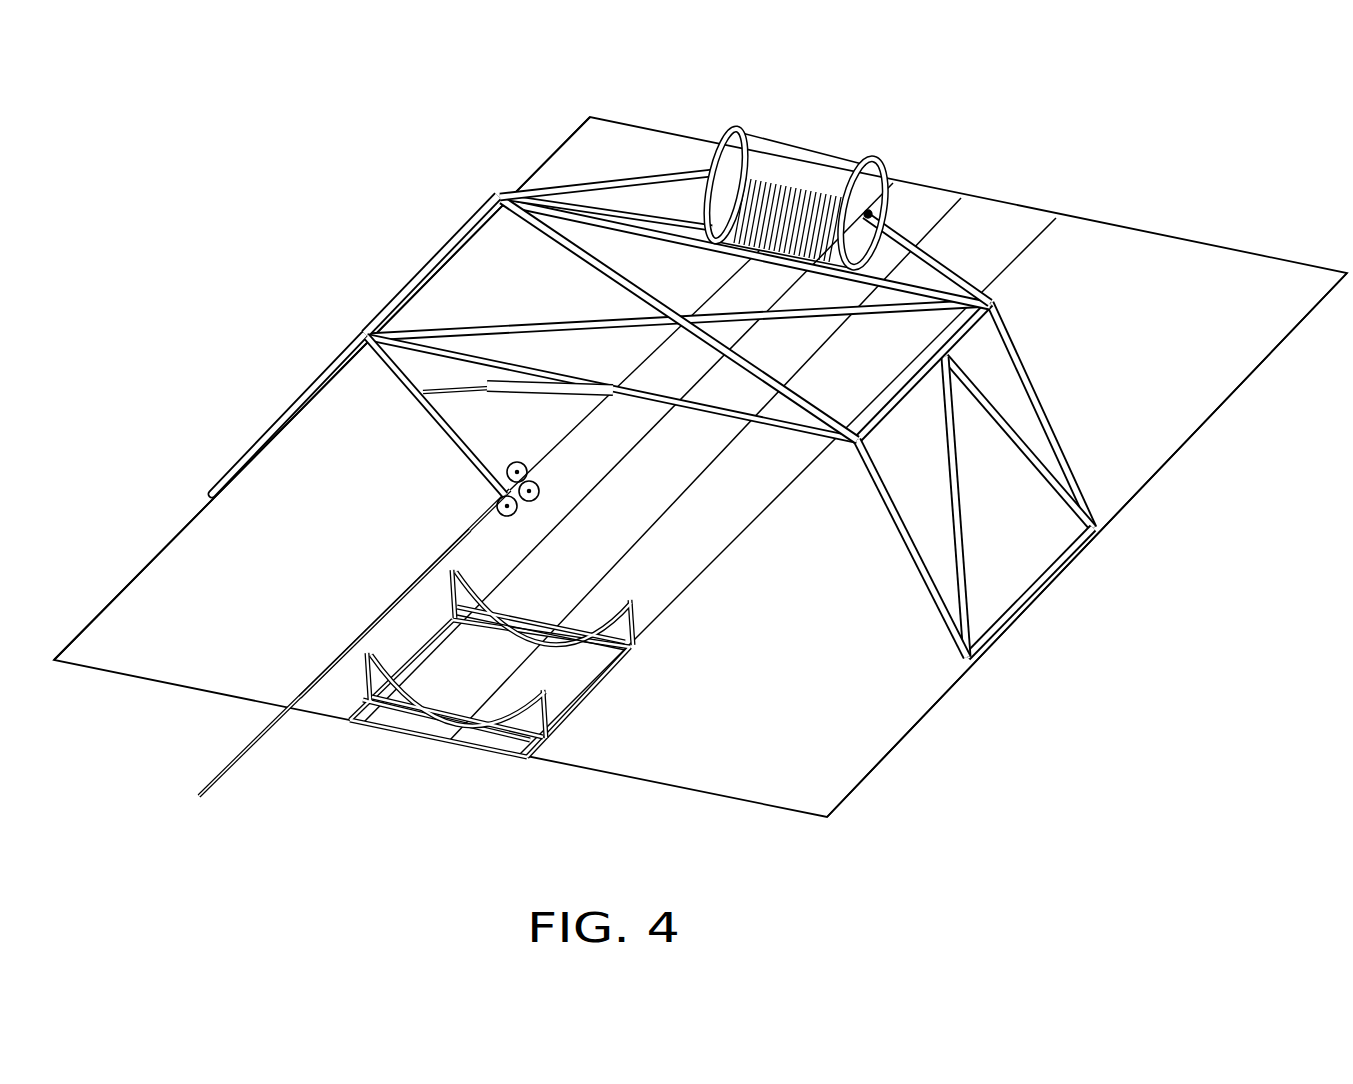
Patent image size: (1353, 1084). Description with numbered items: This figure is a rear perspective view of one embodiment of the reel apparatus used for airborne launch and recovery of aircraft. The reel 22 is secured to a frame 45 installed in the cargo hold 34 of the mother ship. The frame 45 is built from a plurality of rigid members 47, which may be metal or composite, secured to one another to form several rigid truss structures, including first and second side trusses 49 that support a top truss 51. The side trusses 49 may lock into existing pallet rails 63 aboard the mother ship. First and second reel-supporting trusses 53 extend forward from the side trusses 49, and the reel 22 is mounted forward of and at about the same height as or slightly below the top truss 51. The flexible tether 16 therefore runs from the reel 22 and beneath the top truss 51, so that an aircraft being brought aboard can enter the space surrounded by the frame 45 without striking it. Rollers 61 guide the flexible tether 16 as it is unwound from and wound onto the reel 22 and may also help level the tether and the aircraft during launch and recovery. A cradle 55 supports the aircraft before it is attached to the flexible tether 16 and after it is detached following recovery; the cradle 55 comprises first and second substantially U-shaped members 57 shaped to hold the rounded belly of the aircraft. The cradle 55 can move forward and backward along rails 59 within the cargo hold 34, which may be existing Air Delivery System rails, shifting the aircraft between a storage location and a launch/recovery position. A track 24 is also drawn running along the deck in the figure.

The flexible tether 16 is at (227, 768).
The reel 22 is at (876, 163).
The track 24 is at (428, 566).
The cargo hold 34 is at (1167, 317).
The frame 45 is at (915, 553).
The rigid members 47 is at (400, 307).
The side trusses 49 is at (323, 376).
The top truss 51 is at (575, 242).
The reel-supporting trusses 53 is at (647, 178).
The cradle 55 is at (618, 709).
The U-shaped members 57 is at (490, 600).
The rails 59 is at (602, 476).
The rollers 61 is at (516, 462).
The pallet rails 63 is at (187, 524).